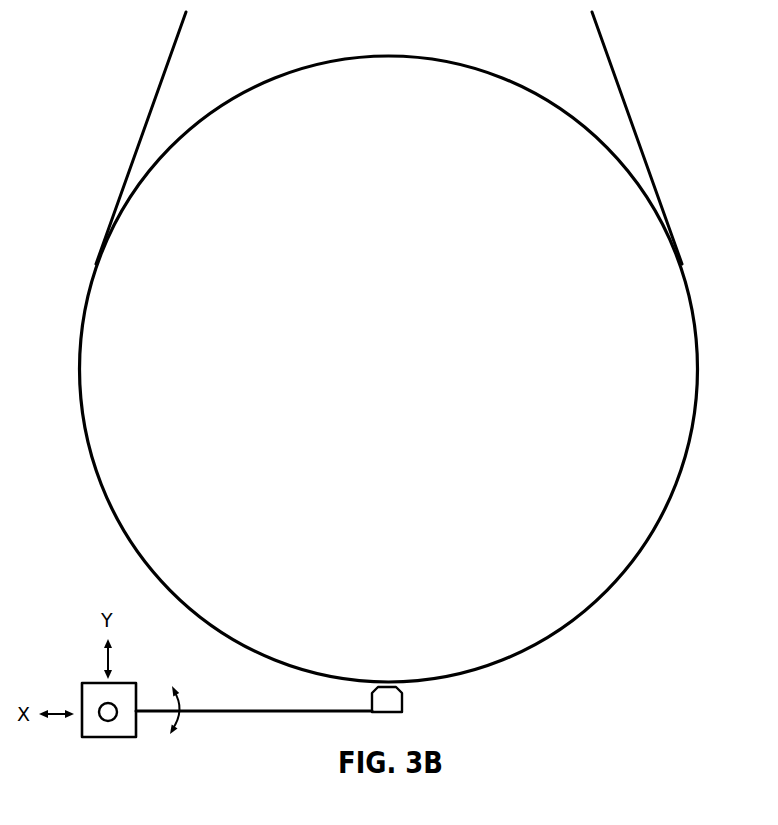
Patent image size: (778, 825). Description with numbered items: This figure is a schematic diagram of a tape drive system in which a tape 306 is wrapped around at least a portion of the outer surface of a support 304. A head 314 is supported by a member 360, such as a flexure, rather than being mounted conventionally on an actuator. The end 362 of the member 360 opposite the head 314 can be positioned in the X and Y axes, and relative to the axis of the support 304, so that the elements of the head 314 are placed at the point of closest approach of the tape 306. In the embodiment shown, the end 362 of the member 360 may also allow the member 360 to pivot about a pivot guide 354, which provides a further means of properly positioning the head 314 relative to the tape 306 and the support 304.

The support 304 is at (127, 272).
The tape 306 is at (160, 83).
The head 314 is at (403, 700).
The pivot guide 354 is at (115, 715).
The member 360 is at (240, 713).
The end of the member 362 is at (110, 765).